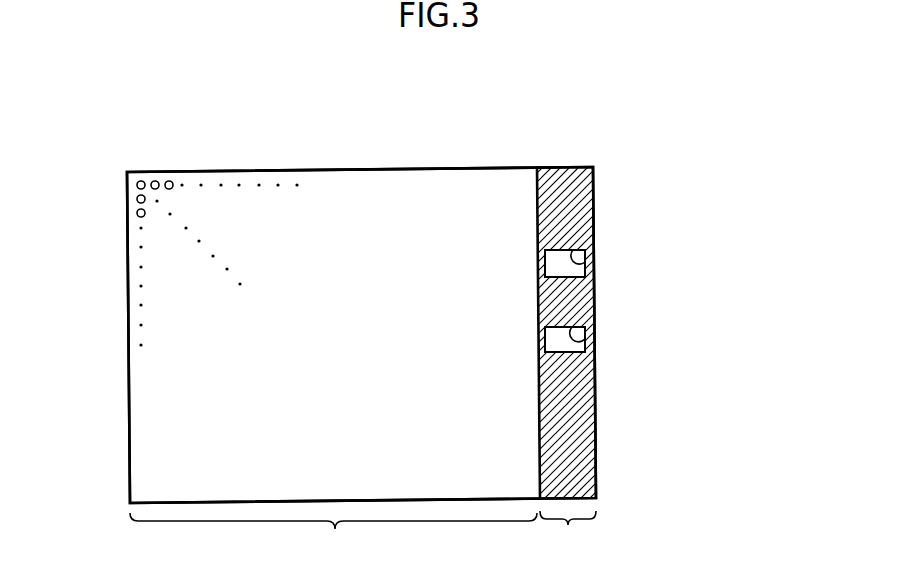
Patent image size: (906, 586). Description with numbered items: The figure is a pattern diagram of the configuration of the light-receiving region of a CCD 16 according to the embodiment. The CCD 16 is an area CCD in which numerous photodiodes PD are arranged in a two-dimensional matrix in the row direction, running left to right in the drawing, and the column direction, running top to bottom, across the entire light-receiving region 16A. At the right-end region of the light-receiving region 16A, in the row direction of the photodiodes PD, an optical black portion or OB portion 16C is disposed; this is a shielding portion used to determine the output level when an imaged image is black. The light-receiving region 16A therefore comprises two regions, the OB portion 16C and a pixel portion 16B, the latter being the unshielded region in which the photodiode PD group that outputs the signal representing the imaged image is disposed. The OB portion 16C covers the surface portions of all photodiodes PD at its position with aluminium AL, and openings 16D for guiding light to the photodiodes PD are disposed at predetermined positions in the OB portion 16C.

The CCD 16 is at (531, 122).
The light-receiving region 16A is at (427, 152).
The pixel portion 16B is at (333, 538).
The OB portion 16C is at (650, 536).
The openings 16D is at (572, 327).
The photodiodes PD is at (168, 156).
The aluminium AL is at (618, 166).